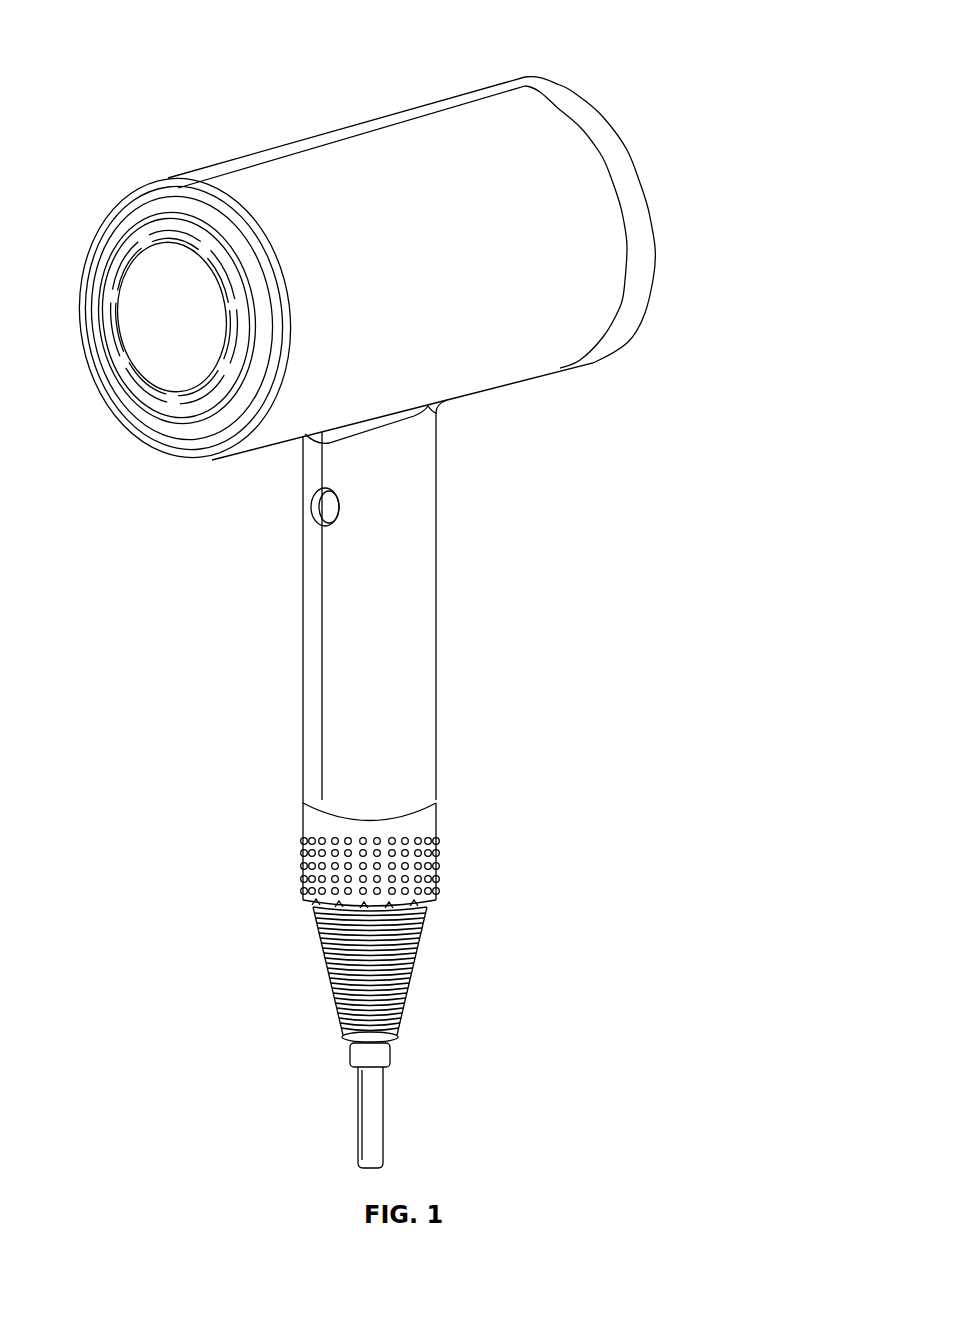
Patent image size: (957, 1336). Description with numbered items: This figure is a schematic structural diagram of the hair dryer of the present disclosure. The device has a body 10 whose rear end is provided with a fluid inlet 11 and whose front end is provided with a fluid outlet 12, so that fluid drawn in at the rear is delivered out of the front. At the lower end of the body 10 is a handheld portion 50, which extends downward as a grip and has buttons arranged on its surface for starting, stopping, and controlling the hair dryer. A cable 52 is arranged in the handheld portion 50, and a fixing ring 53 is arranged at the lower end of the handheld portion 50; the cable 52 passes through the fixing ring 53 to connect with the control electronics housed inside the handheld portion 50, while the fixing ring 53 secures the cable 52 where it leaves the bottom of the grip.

The body 10 is at (395, 173).
The fluid inlet 11 is at (640, 182).
The fluid outlet 12 is at (171, 248).
The handheld portion 50 is at (370, 724).
The fixing ring 53 is at (350, 866).
The cable 52 is at (370, 1116).